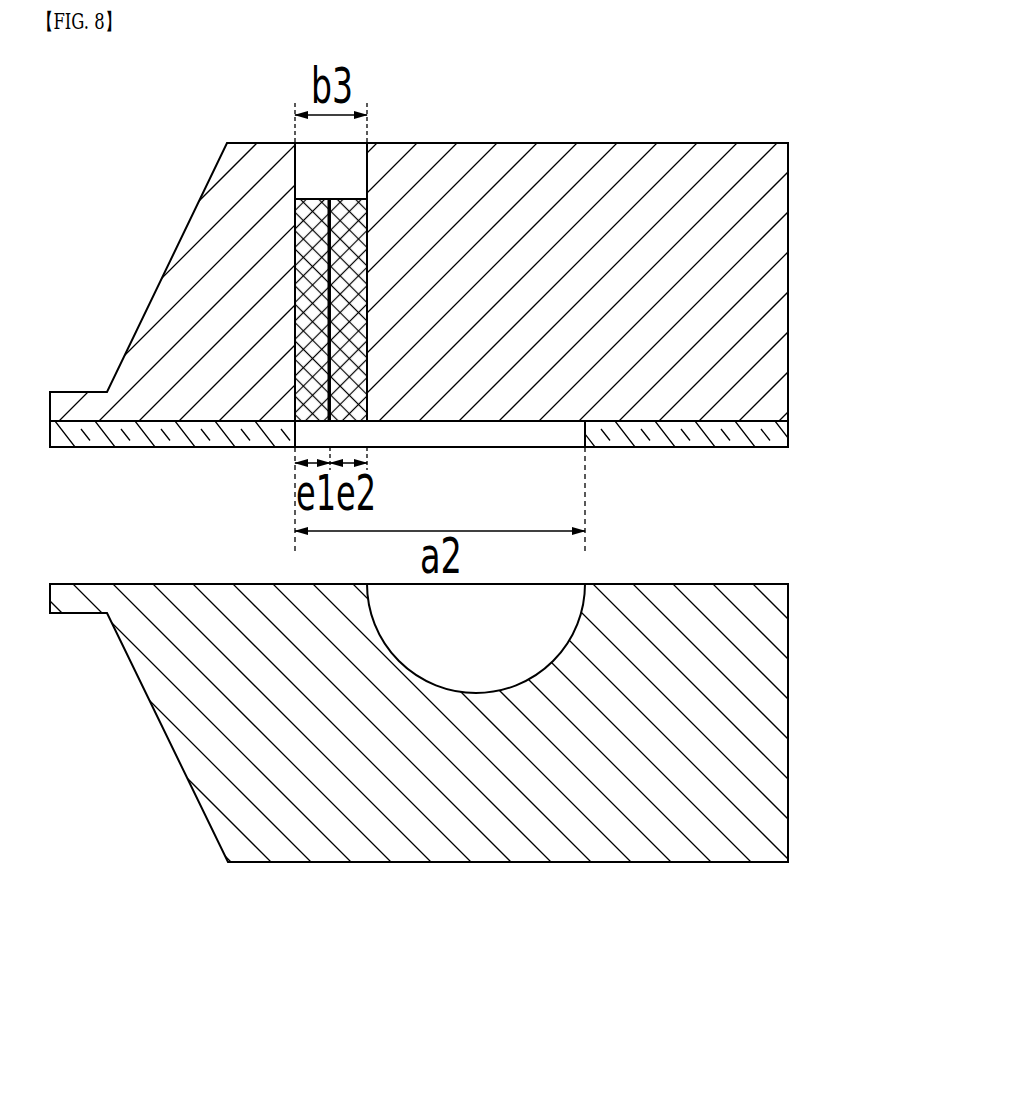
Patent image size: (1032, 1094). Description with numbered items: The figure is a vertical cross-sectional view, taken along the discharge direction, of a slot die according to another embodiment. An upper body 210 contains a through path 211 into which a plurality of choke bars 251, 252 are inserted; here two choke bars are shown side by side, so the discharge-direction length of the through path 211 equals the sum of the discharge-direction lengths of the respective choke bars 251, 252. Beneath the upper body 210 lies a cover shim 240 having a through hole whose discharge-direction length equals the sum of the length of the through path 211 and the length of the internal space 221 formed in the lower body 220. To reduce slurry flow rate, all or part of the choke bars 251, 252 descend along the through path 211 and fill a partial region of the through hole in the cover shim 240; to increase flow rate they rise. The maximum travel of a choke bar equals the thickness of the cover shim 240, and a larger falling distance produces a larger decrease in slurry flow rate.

The upper body 210 is at (788, 282).
The through path 211 is at (310, 177).
The choke bar 251 is at (307, 253).
The choke bar 252 is at (352, 323).
The cover shim 240 is at (788, 432).
The lower body 220 is at (788, 722).
The internal space 221 is at (481, 652).